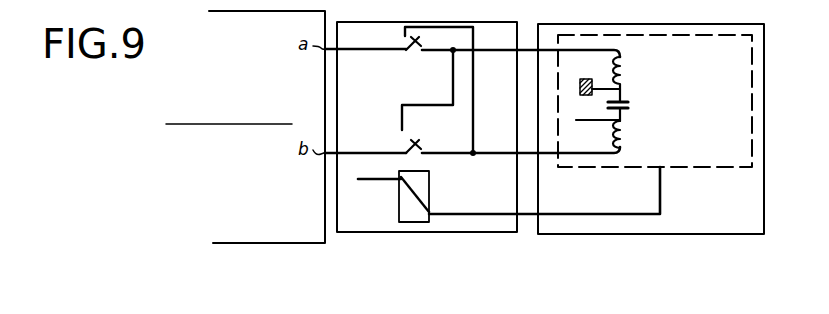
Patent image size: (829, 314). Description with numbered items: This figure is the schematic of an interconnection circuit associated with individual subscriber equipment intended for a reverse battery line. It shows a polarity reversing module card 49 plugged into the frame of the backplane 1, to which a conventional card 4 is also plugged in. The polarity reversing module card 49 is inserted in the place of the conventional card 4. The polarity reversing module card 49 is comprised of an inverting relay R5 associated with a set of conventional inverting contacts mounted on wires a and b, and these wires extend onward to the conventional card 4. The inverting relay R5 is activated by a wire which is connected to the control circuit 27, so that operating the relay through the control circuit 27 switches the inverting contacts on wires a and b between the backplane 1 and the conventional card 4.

The backplane 1 is at (288, 226).
The polarity reversing module card 49 is at (479, 165).
The conventional card 4 is at (660, 229).
The control circuit 27 is at (571, 214).
The inverting relay R5 is at (422, 181).